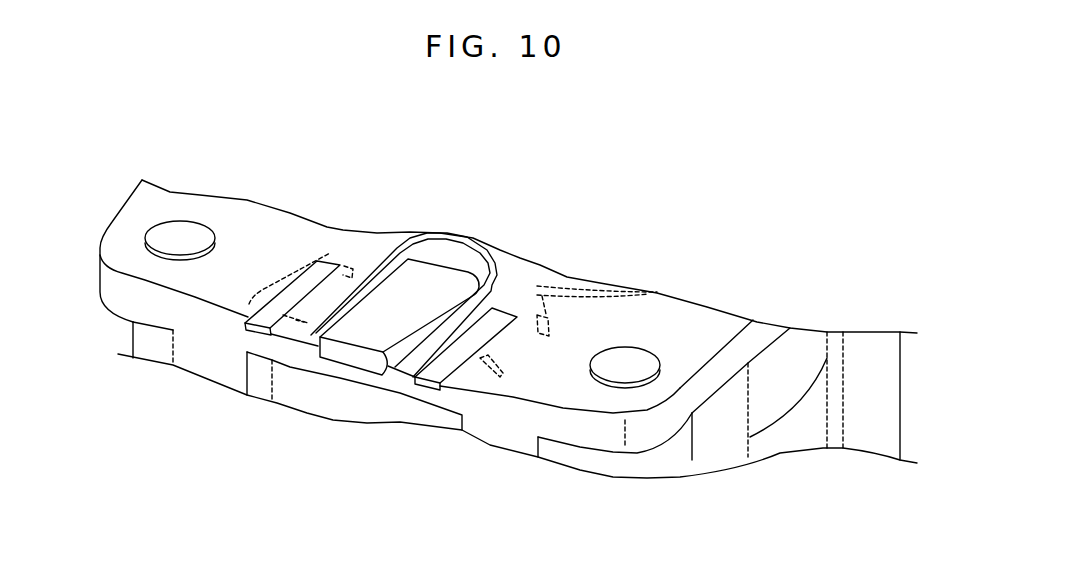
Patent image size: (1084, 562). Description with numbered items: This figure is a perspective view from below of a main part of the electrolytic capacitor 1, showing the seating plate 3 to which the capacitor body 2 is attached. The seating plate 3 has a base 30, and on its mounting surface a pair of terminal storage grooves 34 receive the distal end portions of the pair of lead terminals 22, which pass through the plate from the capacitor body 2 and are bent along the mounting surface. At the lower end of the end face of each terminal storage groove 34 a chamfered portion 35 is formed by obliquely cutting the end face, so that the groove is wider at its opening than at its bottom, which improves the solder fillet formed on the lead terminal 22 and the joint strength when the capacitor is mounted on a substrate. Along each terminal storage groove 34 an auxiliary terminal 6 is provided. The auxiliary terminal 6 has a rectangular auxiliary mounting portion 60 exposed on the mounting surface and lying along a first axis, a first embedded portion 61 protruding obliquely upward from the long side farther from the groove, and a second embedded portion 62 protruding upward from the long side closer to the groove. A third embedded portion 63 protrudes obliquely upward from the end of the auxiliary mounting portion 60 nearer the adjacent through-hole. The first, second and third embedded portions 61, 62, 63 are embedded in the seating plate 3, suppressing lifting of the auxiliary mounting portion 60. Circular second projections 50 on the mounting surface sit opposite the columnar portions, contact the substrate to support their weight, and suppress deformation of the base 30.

The electrolytic capacitor 1 is at (115, 305).
The capacitor body 2 is at (320, 400).
The seating plate 3 is at (138, 204).
The base 30 is at (125, 232).
The second projection 50 is at (203, 236).
The lead terminal 22 is at (424, 268).
The terminal storage groove 34 is at (448, 257).
The chamfered portion 35 is at (470, 252).
The auxiliary terminal 6 is at (322, 260).
The auxiliary mounting portion 60 is at (295, 286).
The first embedded portion 61 is at (292, 262).
The second embedded portion 62 is at (300, 324).
The third embedded portion 63 is at (347, 266).